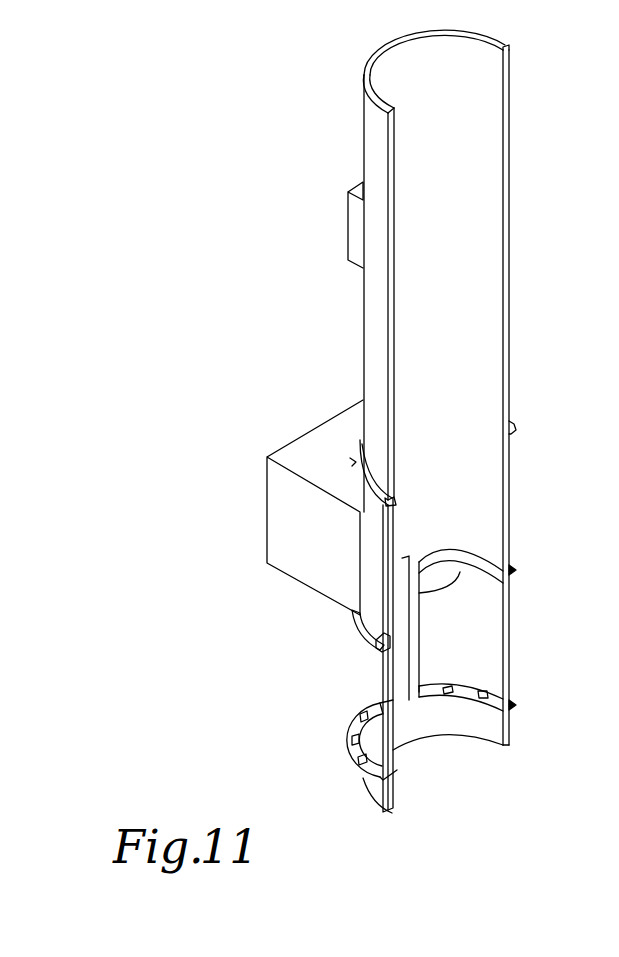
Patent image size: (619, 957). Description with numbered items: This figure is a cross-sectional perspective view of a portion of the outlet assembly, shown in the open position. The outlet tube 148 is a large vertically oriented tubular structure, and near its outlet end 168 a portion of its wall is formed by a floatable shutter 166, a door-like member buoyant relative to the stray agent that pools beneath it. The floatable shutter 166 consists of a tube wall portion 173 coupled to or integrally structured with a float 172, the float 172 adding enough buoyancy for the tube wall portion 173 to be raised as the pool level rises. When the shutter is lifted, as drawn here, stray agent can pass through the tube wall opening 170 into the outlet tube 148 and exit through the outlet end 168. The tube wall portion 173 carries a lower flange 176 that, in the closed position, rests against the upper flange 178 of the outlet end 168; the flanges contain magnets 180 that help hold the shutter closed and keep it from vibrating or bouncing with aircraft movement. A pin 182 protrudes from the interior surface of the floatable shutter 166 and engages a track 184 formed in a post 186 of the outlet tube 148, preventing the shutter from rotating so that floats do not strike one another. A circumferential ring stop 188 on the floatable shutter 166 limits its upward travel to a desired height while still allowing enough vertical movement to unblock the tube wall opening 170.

The outlet tube 148 is at (377, 155).
The floatable shutter 166 is at (481, 387).
The outlet end 168 is at (493, 745).
The tube wall opening 170 is at (404, 550).
The float 172 is at (283, 520).
The tube wall portion 173 is at (504, 485).
The lower flange 176 is at (355, 627).
The upper flange 178 is at (352, 722).
The magnet 180 is at (450, 682).
The pin 182 is at (378, 645).
The track 184 is at (392, 684).
The post 186 is at (460, 565).
The circumferential ring stop 188 is at (352, 462).